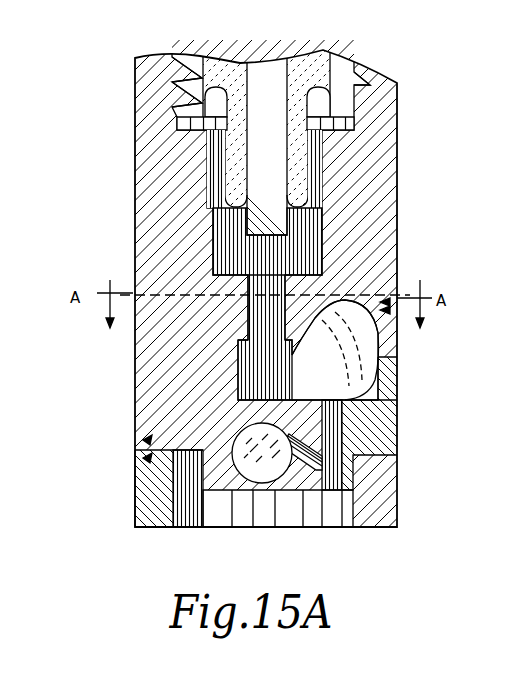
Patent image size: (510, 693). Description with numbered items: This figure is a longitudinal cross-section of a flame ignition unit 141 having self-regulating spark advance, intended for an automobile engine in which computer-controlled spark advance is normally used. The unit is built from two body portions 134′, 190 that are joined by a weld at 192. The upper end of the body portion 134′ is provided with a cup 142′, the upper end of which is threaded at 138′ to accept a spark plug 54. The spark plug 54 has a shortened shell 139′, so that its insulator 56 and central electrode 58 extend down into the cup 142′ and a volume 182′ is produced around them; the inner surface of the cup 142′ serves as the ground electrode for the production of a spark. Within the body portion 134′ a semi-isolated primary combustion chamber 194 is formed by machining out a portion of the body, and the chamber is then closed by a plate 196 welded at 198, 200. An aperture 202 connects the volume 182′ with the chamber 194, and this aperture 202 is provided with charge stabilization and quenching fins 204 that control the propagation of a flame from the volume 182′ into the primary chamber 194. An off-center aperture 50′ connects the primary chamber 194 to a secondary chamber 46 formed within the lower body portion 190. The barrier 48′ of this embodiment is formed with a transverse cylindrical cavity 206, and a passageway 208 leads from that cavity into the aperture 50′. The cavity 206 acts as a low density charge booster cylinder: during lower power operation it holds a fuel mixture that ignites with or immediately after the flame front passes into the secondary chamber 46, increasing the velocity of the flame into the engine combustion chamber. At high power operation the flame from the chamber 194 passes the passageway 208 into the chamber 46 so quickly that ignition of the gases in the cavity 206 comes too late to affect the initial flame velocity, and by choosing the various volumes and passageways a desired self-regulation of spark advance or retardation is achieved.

The flame ignition unit 141 is at (405, 70).
The central electrode 58 is at (278, 52).
The insulator 56 is at (300, 52).
The body portion 134′ is at (172, 80).
The shortened shell 139′ is at (172, 100).
The threaded upper end 138′ is at (368, 97).
The spark plug 54 is at (228, 135).
The volume 182′ is at (325, 152).
The cup 142′ is at (322, 222).
The aperture 202 is at (260, 297).
The charge stabilization and quenching fins 204 is at (262, 318).
The primary combustion chamber 194 is at (378, 355).
The weld 198 is at (390, 302).
The plate 196 is at (380, 378).
The weld 200 is at (385, 402).
The off-center aperture 50′ is at (380, 437).
The passageway 208 is at (305, 473).
The transverse cylindrical cavity 206 is at (262, 484).
The secondary chamber 46 is at (283, 514).
The barrier 48′ is at (222, 490).
The weld 192 is at (147, 440).
The body portion 190 is at (145, 512).